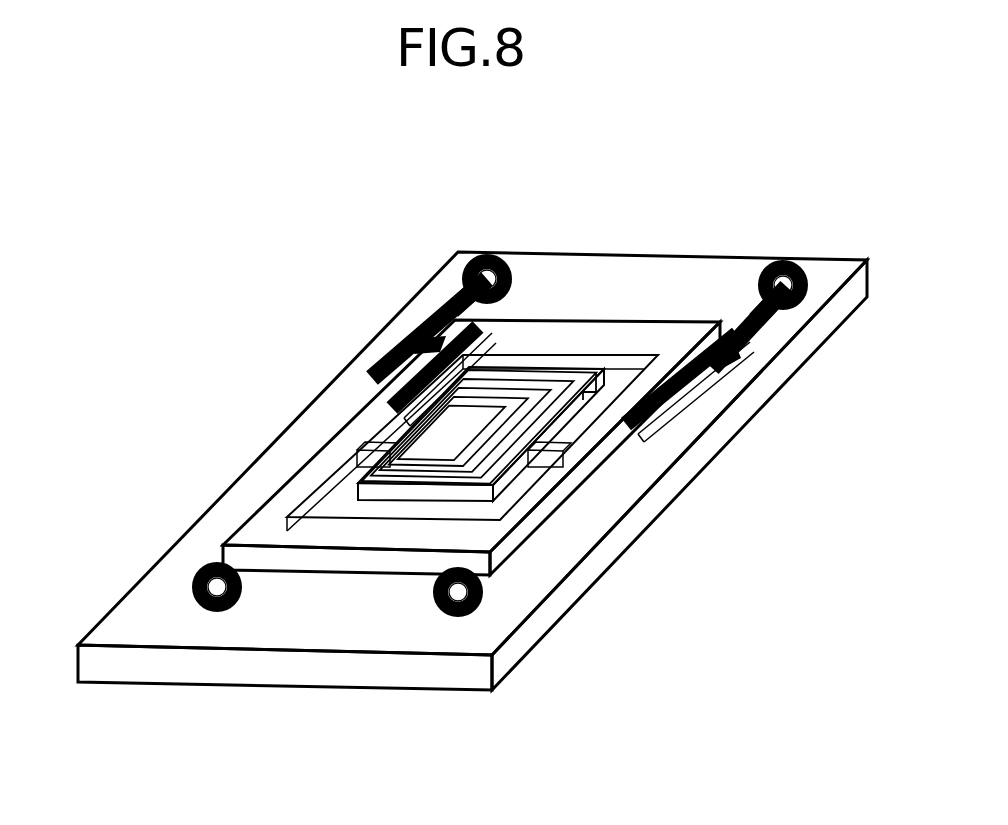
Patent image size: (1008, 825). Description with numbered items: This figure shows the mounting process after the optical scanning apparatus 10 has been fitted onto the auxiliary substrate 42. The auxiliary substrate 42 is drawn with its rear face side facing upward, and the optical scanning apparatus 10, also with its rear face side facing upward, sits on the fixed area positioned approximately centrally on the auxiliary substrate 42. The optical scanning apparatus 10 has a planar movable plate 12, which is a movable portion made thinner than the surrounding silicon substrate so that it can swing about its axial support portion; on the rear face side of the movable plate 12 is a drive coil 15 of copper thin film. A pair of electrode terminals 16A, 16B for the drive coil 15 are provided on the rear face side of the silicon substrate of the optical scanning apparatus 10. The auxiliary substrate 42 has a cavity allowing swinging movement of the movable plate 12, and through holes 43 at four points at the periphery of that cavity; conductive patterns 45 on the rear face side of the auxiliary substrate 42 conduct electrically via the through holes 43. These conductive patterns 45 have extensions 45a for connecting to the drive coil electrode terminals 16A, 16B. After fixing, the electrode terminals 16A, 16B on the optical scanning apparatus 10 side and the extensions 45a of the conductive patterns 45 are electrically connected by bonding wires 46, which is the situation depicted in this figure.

The optical scanning apparatus 10 is at (575, 510).
The movable plate 12 is at (440, 490).
The drive coil 15 is at (425, 447).
The electrode terminal 16A is at (650, 405).
The electrode terminal 16B is at (395, 412).
The auxiliary substrate 42 is at (648, 270).
The through holes 43 is at (486, 268).
The conductive patterns 45 is at (505, 282).
The extensions 45a is at (446, 300).
The bonding wires 46 is at (428, 316).